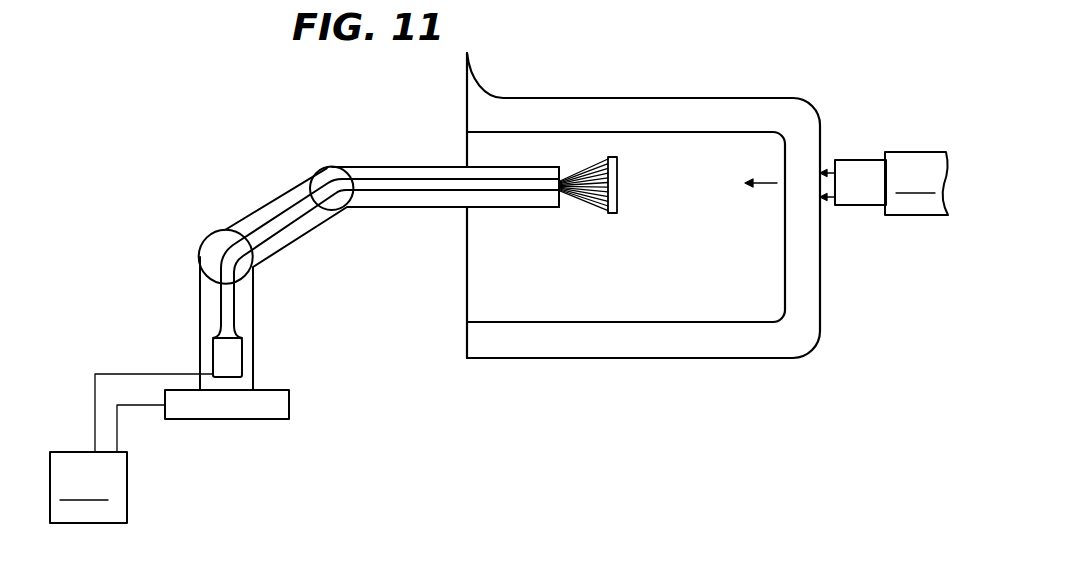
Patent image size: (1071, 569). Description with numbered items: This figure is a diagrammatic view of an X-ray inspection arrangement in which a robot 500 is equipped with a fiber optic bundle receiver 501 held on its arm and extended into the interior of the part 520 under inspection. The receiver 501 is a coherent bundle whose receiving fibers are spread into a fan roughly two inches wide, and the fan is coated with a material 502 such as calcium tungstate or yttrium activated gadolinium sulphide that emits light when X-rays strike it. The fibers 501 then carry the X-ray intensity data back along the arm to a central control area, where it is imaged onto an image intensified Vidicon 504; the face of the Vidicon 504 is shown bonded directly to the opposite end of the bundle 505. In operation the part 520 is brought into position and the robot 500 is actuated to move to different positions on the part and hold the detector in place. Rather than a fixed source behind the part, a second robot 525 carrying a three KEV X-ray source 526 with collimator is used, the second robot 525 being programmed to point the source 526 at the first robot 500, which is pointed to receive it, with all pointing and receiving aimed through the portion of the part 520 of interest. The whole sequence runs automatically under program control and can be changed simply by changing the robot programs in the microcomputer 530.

The robot 500 is at (253, 332).
The fiber optic bundle receiver 501 is at (588, 170).
The light-emitting coating material 502 is at (610, 213).
The image intensified Vidicon 504 is at (220, 358).
The opposite end of the bundle 505 is at (222, 333).
The part 520 is at (576, 350).
The second robot 525 is at (916, 183).
The X-ray source 526 is at (860, 165).
The microcomputer 530 is at (131, 448).